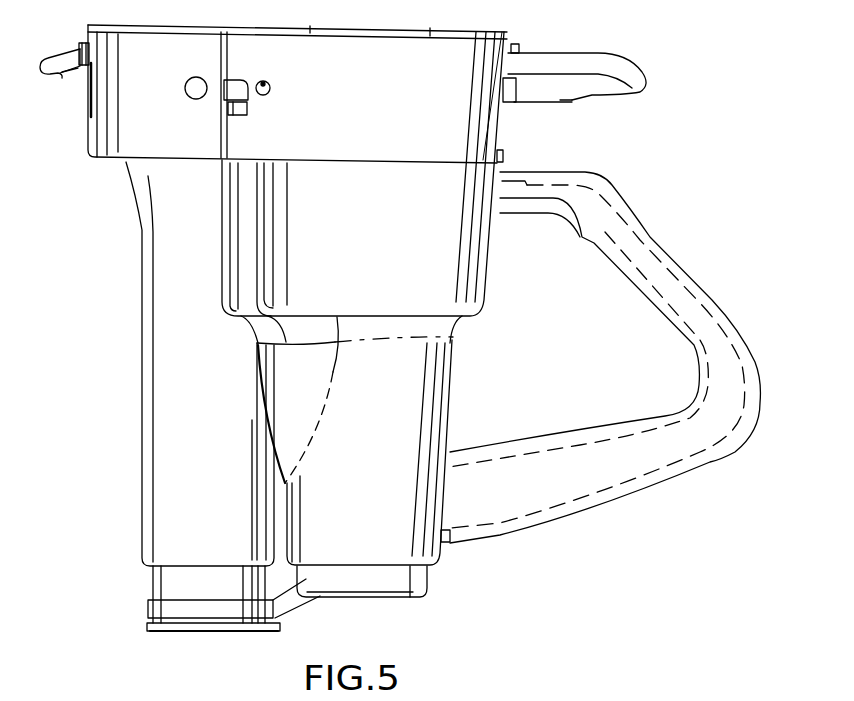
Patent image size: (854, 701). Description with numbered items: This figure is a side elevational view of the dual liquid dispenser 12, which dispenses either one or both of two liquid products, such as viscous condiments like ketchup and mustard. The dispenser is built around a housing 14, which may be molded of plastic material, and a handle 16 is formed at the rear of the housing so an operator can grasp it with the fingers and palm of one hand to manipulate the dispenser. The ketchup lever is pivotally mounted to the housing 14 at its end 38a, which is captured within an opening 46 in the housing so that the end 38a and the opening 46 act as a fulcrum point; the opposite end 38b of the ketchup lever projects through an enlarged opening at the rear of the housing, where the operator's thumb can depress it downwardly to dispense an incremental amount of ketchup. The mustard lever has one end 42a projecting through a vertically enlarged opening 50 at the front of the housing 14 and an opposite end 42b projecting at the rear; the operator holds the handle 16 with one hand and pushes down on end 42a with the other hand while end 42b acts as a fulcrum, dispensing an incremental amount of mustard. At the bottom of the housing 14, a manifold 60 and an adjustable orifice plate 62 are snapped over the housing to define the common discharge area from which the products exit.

The dual liquid dispenser 12 is at (686, 219).
The housing 14 is at (165, 348).
The handle 16 is at (722, 349).
The end of ketchup lever 38a is at (230, 90).
The opposite end of ketchup lever 38b is at (570, 100).
The end of mustard lever 42a is at (62, 76).
The opposite end of mustard lever 42b is at (570, 67).
The opening 46 is at (227, 113).
The vertically enlarged opening 50 is at (90, 113).
The manifold 60 is at (173, 583).
The adjustable orifice plate 62 is at (153, 627).